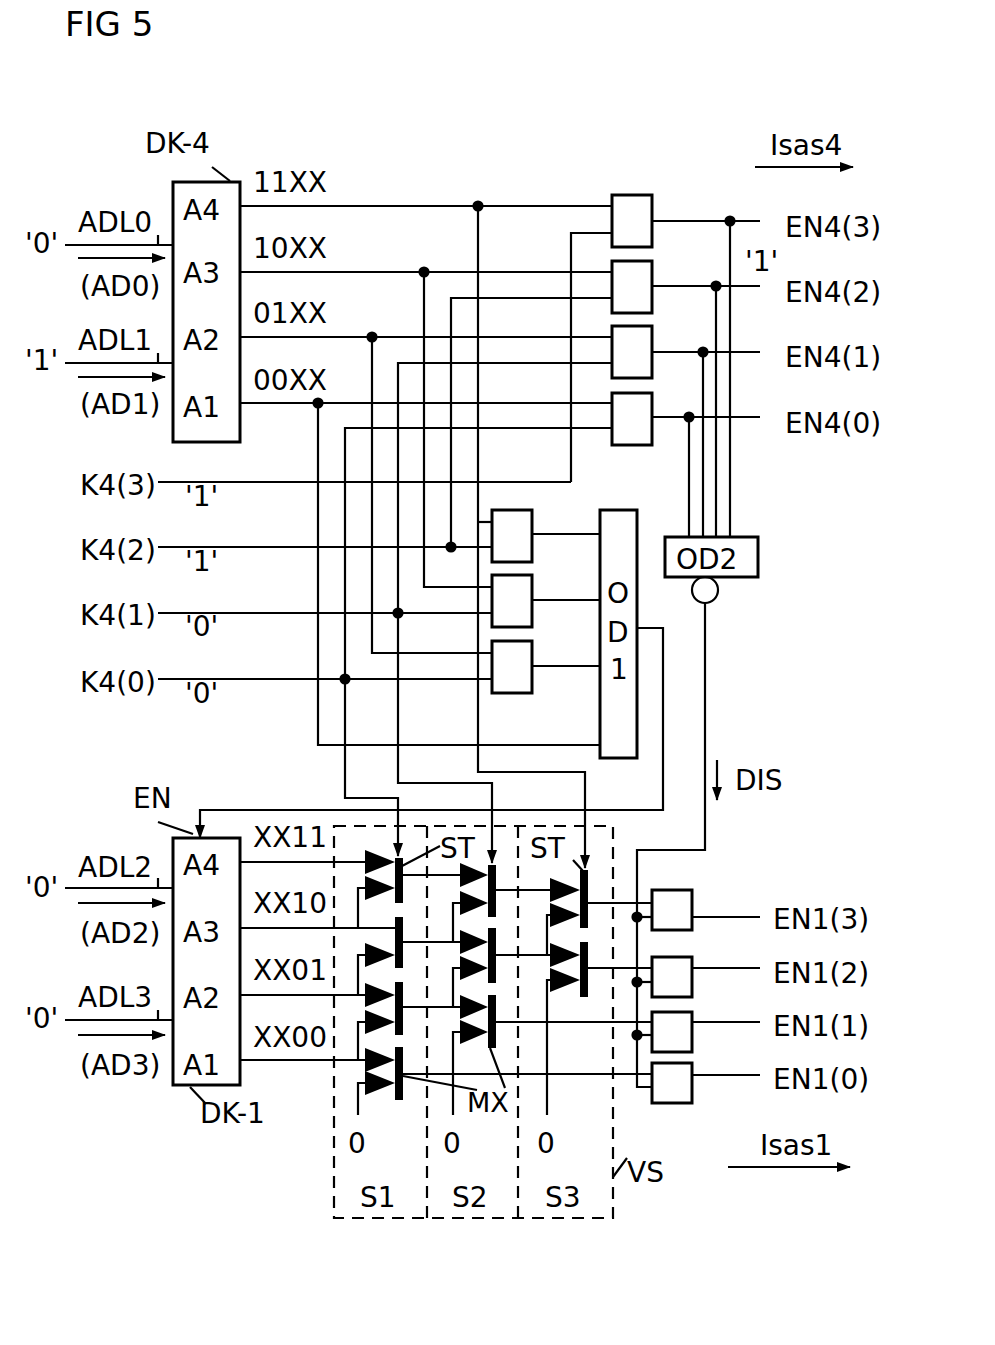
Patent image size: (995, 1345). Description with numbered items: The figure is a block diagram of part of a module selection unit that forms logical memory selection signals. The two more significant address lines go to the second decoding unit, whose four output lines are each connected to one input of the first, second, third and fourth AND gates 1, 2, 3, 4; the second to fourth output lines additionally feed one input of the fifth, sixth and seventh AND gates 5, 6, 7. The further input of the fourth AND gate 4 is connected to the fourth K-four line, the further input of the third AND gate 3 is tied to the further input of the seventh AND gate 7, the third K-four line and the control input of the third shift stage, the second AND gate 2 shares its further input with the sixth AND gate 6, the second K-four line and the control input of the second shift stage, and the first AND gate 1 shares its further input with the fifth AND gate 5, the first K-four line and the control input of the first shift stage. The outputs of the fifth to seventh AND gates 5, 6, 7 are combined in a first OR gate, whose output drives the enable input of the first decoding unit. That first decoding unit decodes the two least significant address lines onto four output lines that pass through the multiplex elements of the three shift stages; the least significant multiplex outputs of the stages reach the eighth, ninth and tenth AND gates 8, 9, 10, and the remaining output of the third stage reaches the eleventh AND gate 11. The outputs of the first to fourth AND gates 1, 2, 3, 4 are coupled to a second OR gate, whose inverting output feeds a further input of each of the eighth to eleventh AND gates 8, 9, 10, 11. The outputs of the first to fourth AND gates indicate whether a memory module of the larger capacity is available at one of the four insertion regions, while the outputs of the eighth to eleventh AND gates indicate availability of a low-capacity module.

The first AND gate 1 is at (657, 413).
The second AND gate 2 is at (657, 346).
The third AND gate 3 is at (657, 281).
The fourth AND gate 4 is at (657, 215).
The fifth AND gate 5 is at (537, 661).
The sixth AND gate 6 is at (537, 595).
The seventh AND gate 7 is at (537, 530).
The eighth AND gate 8 is at (698, 1069).
The ninth AND gate 9 is at (698, 1019).
The tenth AND gate 10 is at (707, 964).
The eleventh AND gate 11 is at (707, 904).